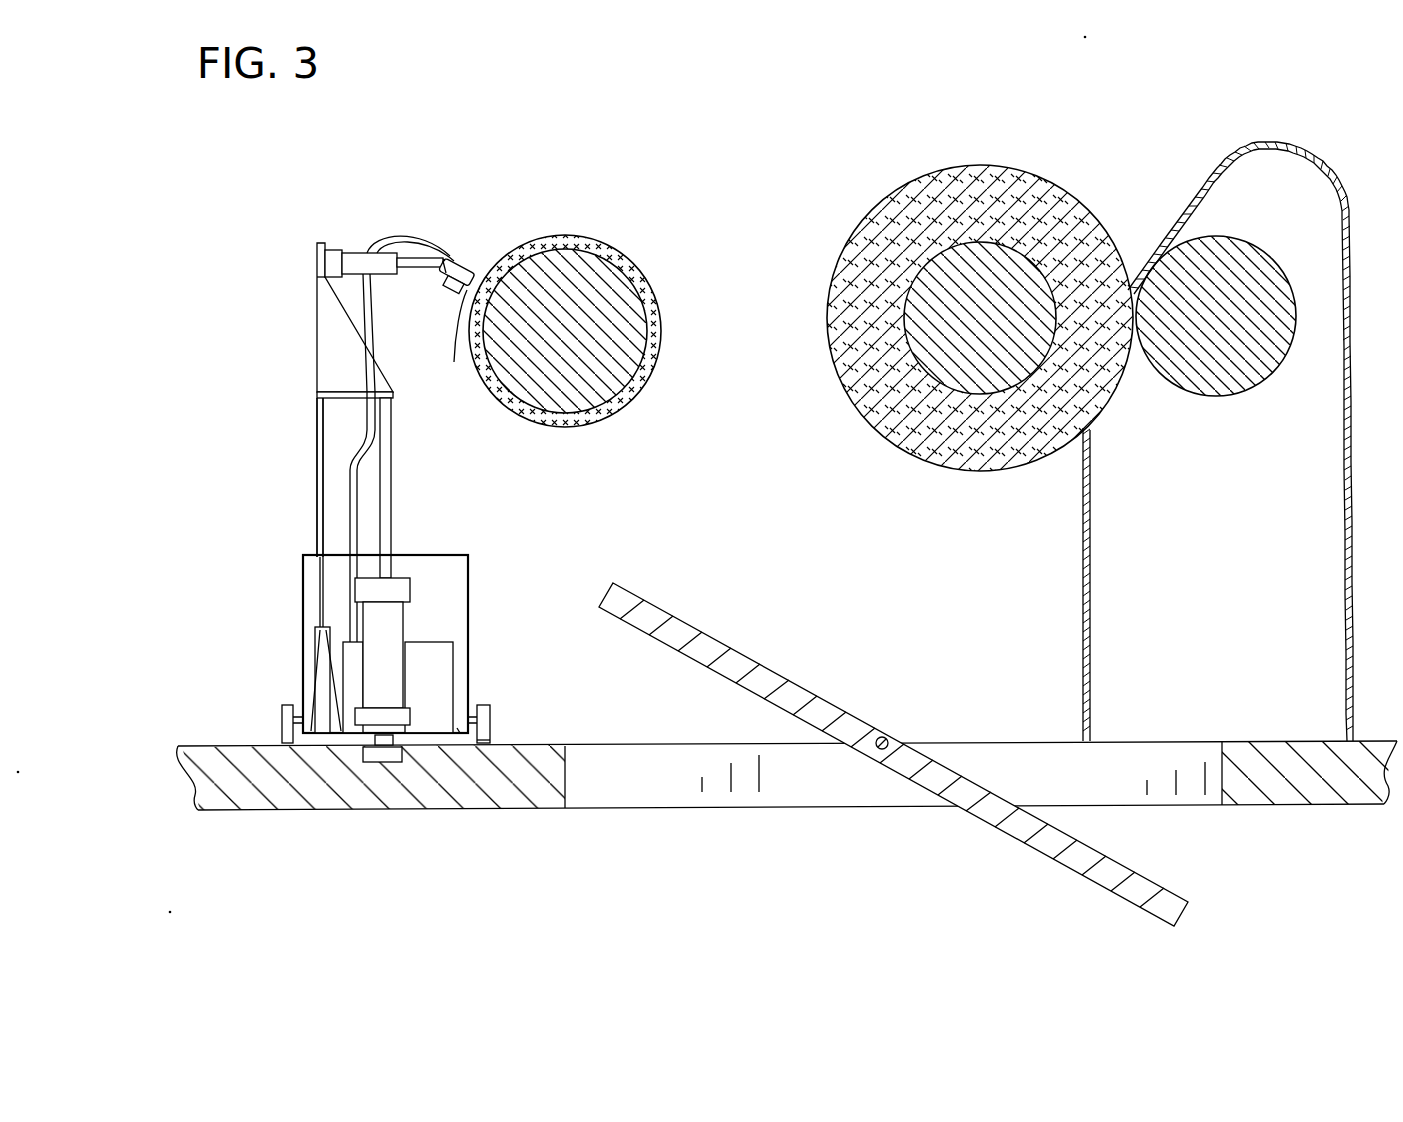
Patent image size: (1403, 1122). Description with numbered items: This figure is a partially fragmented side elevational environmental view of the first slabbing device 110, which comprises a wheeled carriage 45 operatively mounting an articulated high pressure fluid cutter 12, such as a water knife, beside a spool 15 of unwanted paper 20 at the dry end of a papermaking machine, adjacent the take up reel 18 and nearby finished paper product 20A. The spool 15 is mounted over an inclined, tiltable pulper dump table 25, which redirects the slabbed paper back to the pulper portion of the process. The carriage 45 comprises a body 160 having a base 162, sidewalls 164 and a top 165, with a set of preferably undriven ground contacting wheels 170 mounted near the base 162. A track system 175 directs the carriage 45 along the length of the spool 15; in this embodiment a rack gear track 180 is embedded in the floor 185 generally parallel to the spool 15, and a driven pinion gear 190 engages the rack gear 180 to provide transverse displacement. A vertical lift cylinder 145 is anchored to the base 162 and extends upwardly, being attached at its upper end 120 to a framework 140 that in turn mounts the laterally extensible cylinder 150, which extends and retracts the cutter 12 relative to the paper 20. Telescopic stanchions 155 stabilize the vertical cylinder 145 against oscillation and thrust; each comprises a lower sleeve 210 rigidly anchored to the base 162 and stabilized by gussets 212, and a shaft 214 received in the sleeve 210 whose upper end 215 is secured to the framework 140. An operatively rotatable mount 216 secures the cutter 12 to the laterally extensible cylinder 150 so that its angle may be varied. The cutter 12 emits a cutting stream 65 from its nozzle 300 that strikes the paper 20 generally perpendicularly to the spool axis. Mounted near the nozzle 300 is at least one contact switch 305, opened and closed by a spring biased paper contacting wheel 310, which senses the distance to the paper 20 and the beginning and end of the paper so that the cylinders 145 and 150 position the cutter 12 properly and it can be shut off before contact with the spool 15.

The first embodiment device 110 is at (336, 206).
The laterally extensible cylinder 150 is at (361, 245).
The nozzle 300 is at (460, 253).
The high pressure cutter 12 is at (466, 258).
The cutting stream 65 is at (490, 263).
The spool 15 is at (997, 165).
The unwanted paper 20 is at (632, 240).
The finished paper product 20A is at (854, 228).
The take up reel 18 is at (1214, 236).
The framework 140 is at (311, 331).
The upper end of shaft 215 is at (318, 393).
The shaft 214 is at (316, 499).
The upper end of vertical cylinder 120 is at (394, 399).
The rotatable mount 216 is at (440, 278).
The contact switch 305 is at (457, 292).
The paper contacting wheel 310 is at (448, 341).
The top 165 is at (436, 555).
The telescopic stanchion 155 is at (311, 539).
The carriage 45 is at (291, 614).
The vertical lift cylinder 145 is at (421, 584).
The body 160 is at (298, 668).
The sidewall 164 is at (302, 650).
The ground contacting wheel 170 is at (285, 720).
The driven pinion gear 190 is at (406, 770).
The rack gear track 180 is at (382, 762).
The gusset 212 is at (313, 733).
The lower sleeve 210 is at (327, 733).
The track system 175 is at (460, 733).
The base 162 is at (478, 744).
The floor 185 is at (545, 783).
The tiltable pulper dump table 25 is at (983, 846).